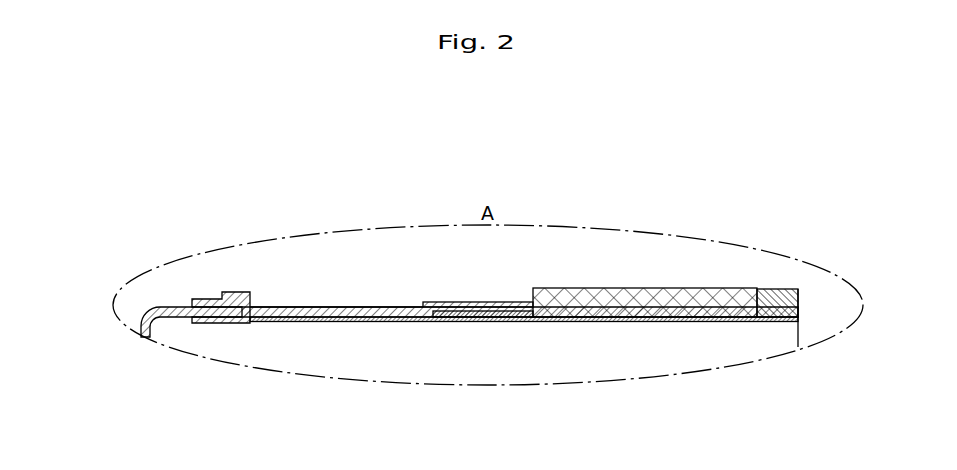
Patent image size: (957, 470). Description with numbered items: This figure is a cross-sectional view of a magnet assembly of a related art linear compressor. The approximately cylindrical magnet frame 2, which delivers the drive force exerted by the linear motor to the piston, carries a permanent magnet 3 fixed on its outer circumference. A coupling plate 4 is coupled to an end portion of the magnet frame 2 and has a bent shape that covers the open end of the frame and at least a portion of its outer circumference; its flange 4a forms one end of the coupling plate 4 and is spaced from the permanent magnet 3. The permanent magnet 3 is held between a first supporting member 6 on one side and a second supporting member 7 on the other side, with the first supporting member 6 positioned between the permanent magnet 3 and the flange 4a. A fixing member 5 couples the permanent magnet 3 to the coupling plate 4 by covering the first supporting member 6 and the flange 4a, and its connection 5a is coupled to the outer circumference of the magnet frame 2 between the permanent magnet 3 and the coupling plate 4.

The magnet frame 2 is at (468, 322).
The permanent magnet 3 is at (643, 289).
The coupling plate 4 is at (142, 328).
The flange 4a is at (243, 292).
The fixing member 5 is at (407, 292).
The connection 5a is at (350, 307).
The first supporting member 6 is at (515, 310).
The second supporting member 7 is at (798, 300).